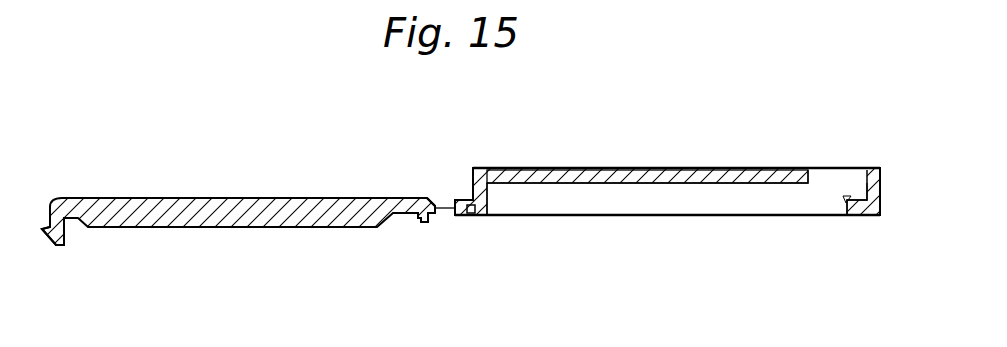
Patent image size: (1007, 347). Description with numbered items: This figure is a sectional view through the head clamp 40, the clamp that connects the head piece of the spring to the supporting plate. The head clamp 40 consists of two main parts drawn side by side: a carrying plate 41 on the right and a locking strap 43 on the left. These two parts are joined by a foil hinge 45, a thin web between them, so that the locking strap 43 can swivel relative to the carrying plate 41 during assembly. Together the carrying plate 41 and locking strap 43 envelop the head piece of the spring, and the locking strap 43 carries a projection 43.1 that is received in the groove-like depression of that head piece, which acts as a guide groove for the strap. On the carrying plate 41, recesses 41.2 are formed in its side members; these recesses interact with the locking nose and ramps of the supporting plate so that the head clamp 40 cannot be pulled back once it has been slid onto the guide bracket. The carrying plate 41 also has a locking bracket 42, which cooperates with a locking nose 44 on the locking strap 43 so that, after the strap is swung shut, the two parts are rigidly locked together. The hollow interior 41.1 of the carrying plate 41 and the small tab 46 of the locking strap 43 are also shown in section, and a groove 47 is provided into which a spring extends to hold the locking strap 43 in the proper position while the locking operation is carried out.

The head clamp 40 is at (468, 158).
The carrying plate 41 is at (768, 169).
The cavity of second plate 41.1 is at (664, 200).
The recesses 41.2 is at (672, 172).
The locking brackets 42 is at (842, 204).
The locking strap 43 is at (164, 187).
The projection 43.1 is at (236, 240).
The locking noses 44 is at (63, 247).
The foil hinge 45 is at (437, 199).
The tab of first plate 46 is at (419, 223).
The grooves 47 is at (472, 216).